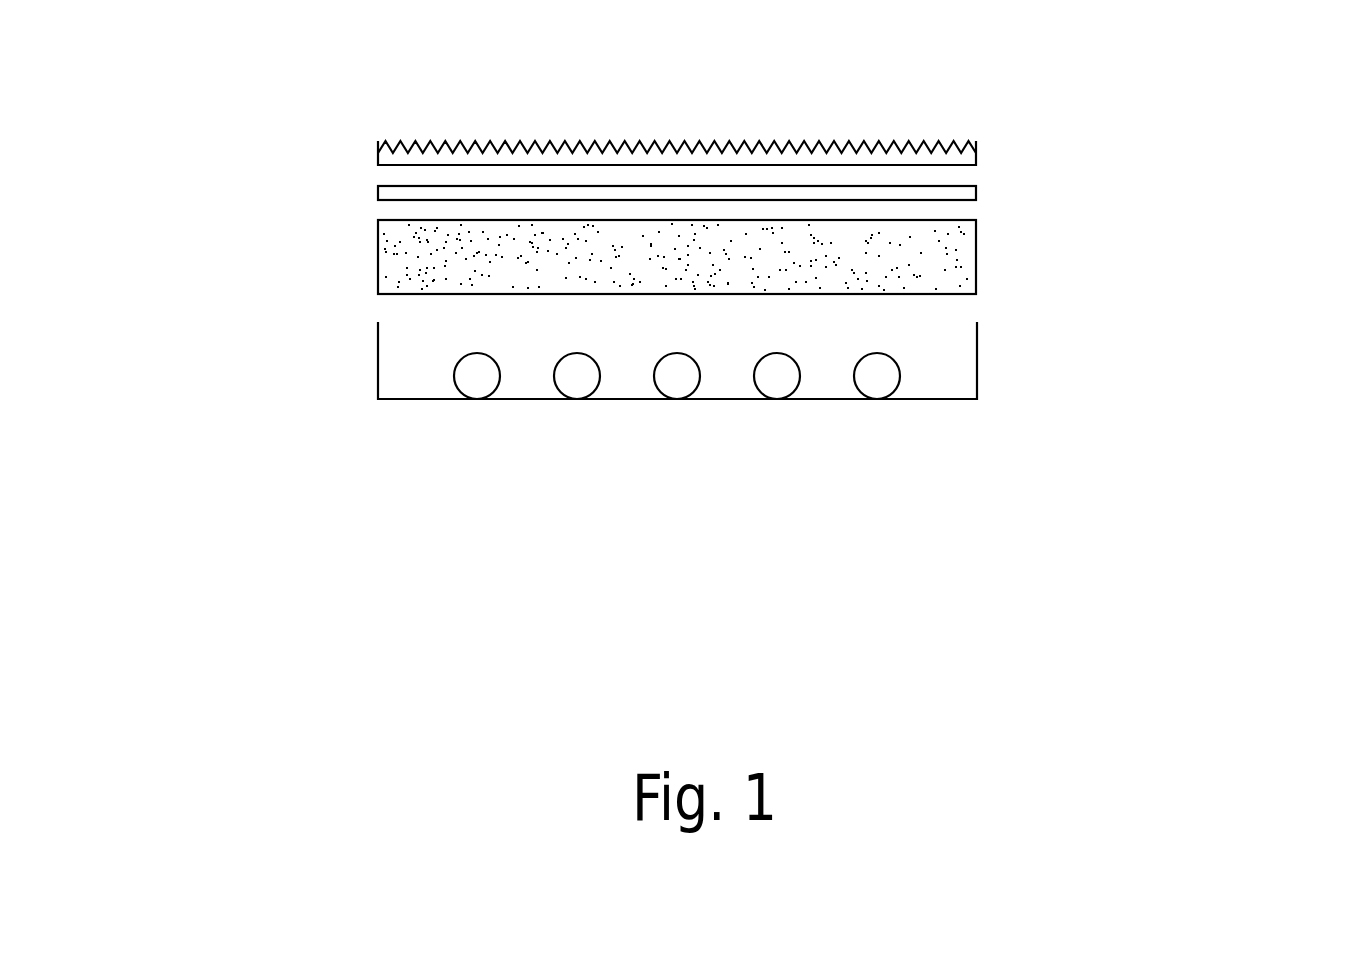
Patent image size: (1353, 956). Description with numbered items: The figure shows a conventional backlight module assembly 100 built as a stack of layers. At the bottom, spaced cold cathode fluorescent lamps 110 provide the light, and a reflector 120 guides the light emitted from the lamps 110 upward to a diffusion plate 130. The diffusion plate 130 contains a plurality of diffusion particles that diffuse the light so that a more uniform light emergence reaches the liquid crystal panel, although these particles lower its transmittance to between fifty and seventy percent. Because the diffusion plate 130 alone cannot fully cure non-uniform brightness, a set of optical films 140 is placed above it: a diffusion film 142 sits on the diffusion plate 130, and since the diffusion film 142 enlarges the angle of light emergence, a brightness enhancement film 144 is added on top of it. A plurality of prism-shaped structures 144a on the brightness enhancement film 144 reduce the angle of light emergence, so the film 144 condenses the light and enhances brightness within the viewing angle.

The backlight module assembly 100 is at (731, 341).
The cold cathode fluorescent lamps 110 is at (777, 377).
The reflector 120 is at (977, 358).
The diffusion plate 130 is at (948, 280).
The optical films 140 is at (731, 140).
The diffusion film 142 is at (953, 193).
The brightness enhancement film 144 is at (645, 114).
The prism-shaped structures 144a is at (387, 150).